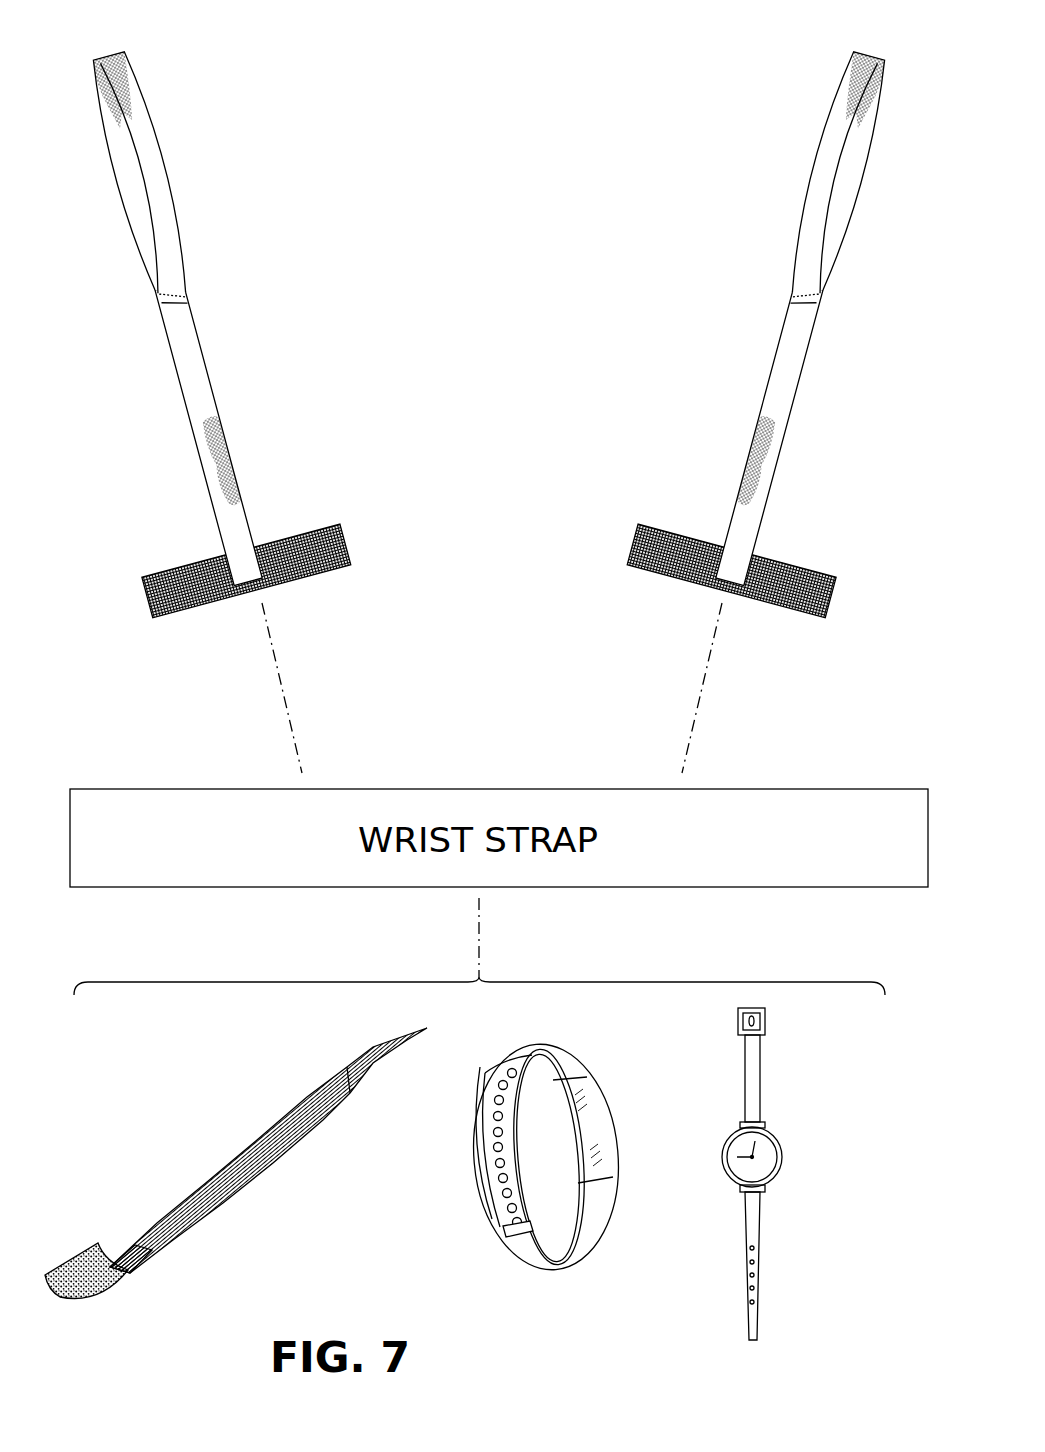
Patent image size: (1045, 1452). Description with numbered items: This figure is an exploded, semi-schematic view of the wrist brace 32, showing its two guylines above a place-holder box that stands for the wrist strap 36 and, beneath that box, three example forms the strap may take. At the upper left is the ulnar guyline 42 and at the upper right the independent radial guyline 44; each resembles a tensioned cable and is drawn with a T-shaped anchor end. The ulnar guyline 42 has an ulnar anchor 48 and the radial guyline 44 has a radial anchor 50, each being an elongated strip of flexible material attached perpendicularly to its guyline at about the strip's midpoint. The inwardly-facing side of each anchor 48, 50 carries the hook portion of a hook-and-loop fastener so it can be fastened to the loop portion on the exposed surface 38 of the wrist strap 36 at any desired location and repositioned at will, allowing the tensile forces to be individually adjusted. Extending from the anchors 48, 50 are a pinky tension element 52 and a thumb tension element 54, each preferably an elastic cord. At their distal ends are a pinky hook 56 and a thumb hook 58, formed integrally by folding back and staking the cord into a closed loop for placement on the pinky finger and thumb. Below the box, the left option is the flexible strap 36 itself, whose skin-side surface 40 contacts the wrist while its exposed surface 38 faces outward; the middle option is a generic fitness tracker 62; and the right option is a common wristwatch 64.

The wrist brace 32 is at (489, 316).
The wrist strap 36 is at (198, 1176).
The exposed surface 38 is at (102, 1293).
The skin-side surface 40 is at (153, 1240).
The ulnar guyline 42 is at (217, 385).
The radial guyline 44 is at (755, 403).
The ulnar anchor 48 is at (345, 547).
The radial anchor 50 is at (630, 548).
The pinky tension element 52 is at (200, 415).
The thumb tension element 54 is at (793, 360).
The pinky hook 56 is at (135, 80).
The thumb hook 58 is at (827, 157).
The fitness tracker 62 is at (592, 1238).
The wristwatch 64 is at (755, 1228).